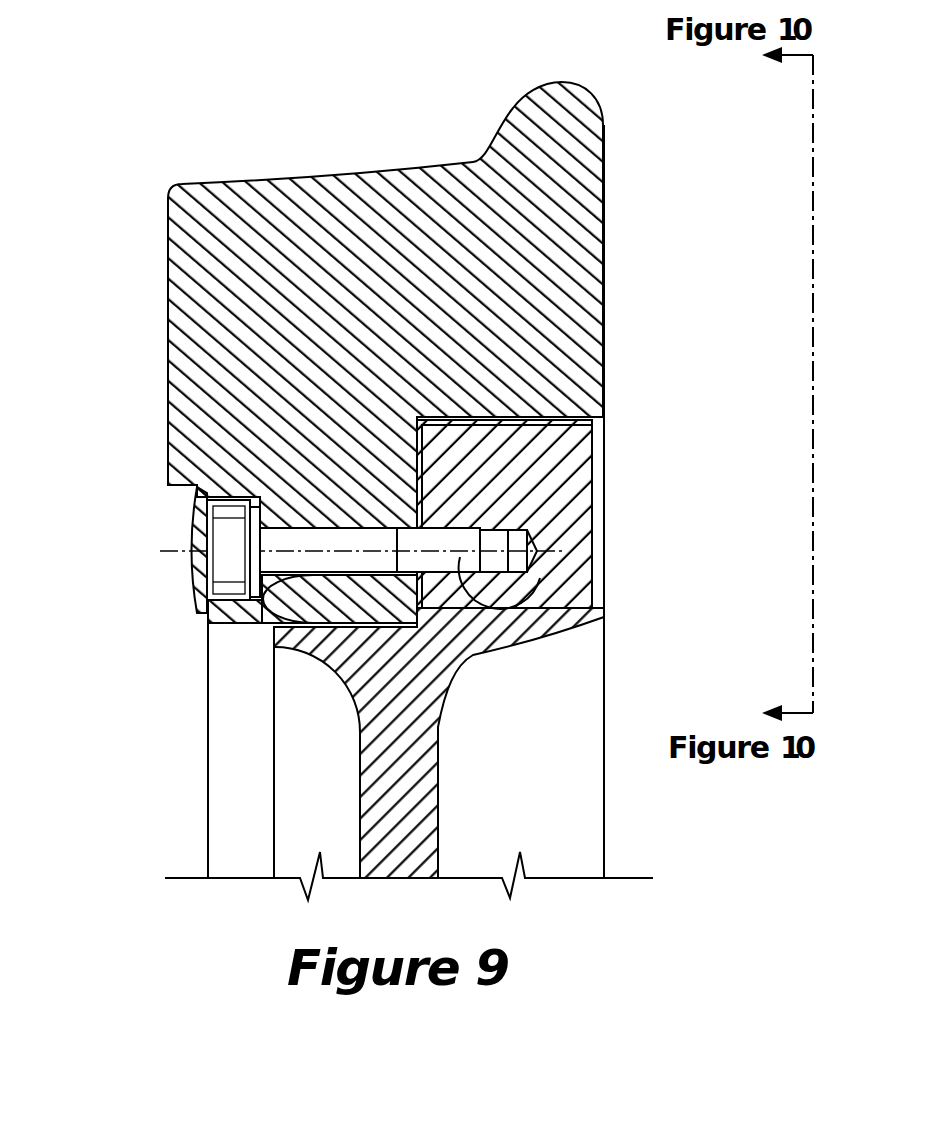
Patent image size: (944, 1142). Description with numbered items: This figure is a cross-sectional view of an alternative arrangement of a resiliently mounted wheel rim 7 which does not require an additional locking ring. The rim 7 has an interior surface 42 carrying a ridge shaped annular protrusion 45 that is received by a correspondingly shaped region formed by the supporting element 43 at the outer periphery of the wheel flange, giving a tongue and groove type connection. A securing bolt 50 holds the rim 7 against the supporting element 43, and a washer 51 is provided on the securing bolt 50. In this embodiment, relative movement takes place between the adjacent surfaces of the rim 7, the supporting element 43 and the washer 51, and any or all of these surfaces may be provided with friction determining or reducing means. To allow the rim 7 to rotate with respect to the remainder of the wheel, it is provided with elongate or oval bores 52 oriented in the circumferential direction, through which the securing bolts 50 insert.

The rim 7 is at (570, 290).
The interior surface 42 is at (404, 628).
The supporting element 43 is at (560, 473).
The ridge shaped annular protrusion 45 is at (604, 617).
The securing bolt 50 is at (480, 612).
The washer 51 is at (270, 628).
The elongate or oval bores 52 is at (273, 645).